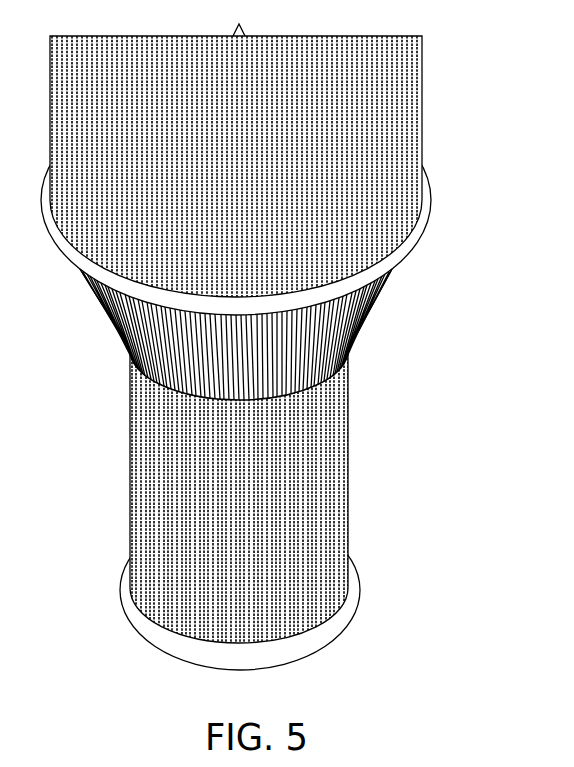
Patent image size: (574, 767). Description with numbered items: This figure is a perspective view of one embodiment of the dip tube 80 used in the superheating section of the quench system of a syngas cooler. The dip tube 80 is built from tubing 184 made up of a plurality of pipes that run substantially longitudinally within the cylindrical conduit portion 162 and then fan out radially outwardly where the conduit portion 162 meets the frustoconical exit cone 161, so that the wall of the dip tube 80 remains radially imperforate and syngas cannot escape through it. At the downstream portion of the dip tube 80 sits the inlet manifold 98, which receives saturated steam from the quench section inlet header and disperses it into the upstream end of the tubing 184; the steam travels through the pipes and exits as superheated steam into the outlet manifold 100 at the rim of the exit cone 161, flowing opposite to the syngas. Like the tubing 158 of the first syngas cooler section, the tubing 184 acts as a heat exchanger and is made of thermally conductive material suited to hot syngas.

The tubing 158 is at (415, 82).
The outlet manifold 100 is at (420, 214).
The exit cone 161 is at (378, 302).
The tubing 184 is at (331, 390).
The dip tube 80 is at (334, 480).
The conduit portion 162 is at (318, 551).
The inlet manifold 98 is at (308, 643).